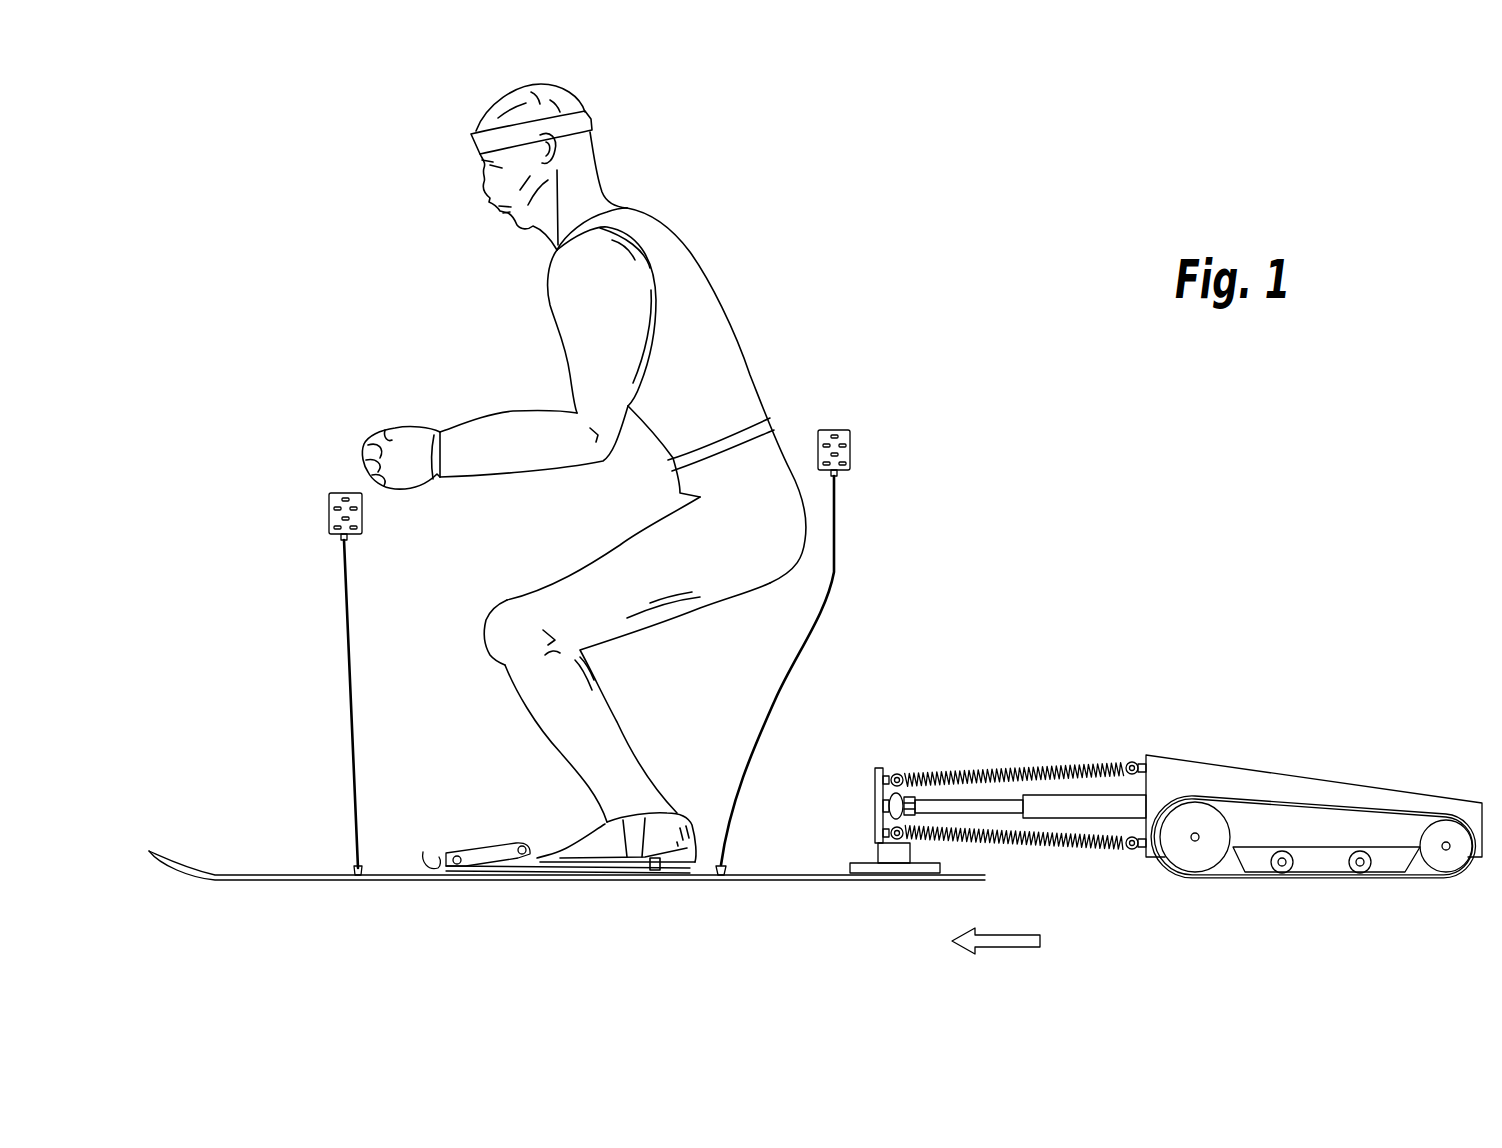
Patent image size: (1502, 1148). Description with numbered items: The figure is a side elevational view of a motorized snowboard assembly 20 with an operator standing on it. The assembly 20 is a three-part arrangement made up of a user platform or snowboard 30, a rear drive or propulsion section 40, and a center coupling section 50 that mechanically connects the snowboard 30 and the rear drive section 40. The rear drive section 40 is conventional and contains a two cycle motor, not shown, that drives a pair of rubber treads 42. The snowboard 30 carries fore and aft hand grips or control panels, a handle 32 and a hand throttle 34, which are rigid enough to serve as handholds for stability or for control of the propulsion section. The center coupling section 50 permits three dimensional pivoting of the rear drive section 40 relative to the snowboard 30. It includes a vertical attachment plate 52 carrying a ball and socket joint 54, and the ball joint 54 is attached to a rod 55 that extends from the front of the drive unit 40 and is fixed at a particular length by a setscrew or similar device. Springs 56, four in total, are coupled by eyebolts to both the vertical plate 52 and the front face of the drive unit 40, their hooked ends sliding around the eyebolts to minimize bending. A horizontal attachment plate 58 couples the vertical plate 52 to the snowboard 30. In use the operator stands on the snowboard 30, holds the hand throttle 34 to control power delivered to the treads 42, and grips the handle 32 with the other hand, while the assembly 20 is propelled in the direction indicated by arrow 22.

The assembly 20 is at (815, 699).
The arrow 22 is at (1016, 932).
The snowboard 30 is at (437, 855).
The handle 32 is at (347, 549).
The hand throttle 34 is at (851, 440).
The rear drive section 40 is at (1314, 839).
The rubber treads 42 is at (1425, 878).
The center coupling section 50 is at (1034, 773).
The vertical attachment plate 52 is at (866, 778).
The ball and socket joint 54 is at (907, 780).
The rod 55 is at (1093, 803).
The springs 56 is at (1082, 848).
The horizontal attachment plate 58 is at (852, 865).